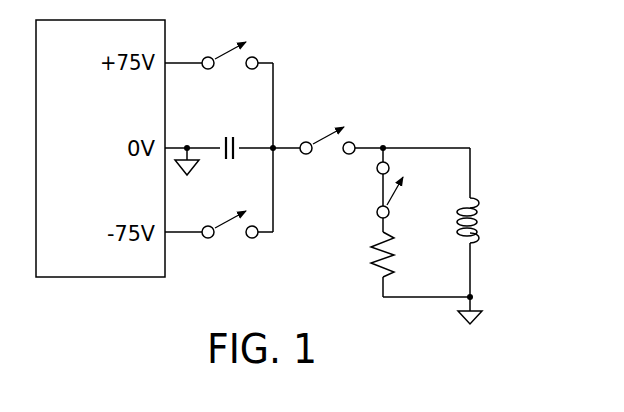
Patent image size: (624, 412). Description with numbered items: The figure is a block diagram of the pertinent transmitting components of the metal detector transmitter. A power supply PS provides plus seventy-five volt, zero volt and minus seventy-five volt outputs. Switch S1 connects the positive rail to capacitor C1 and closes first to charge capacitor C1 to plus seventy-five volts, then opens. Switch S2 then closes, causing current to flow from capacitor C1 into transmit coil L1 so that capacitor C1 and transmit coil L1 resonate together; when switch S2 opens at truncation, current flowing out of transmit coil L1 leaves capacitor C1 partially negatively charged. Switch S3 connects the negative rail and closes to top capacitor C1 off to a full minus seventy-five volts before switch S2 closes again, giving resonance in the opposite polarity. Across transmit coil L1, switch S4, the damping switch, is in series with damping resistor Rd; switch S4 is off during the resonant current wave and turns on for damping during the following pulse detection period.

The switch S1 is at (230, 44).
The switch S2 is at (327, 129).
The switch S3 is at (230, 213).
The damping switch S4 is at (405, 190).
The capacitor C1 is at (228, 134).
The damping resistor Rd is at (400, 254).
The transmit coil L1 is at (511, 221).
The power supply PS is at (100, 176).